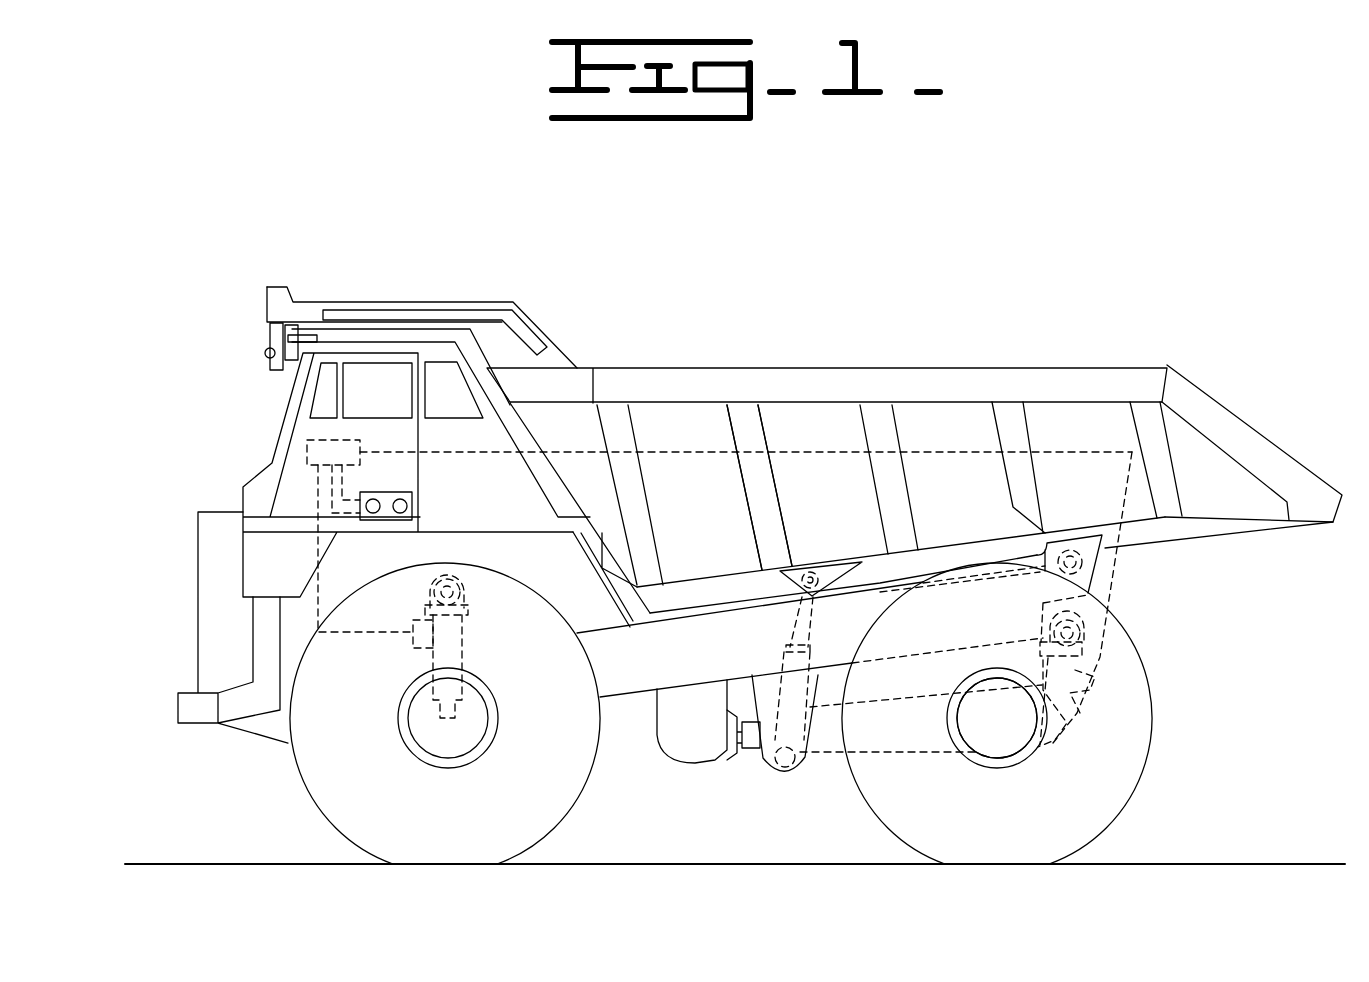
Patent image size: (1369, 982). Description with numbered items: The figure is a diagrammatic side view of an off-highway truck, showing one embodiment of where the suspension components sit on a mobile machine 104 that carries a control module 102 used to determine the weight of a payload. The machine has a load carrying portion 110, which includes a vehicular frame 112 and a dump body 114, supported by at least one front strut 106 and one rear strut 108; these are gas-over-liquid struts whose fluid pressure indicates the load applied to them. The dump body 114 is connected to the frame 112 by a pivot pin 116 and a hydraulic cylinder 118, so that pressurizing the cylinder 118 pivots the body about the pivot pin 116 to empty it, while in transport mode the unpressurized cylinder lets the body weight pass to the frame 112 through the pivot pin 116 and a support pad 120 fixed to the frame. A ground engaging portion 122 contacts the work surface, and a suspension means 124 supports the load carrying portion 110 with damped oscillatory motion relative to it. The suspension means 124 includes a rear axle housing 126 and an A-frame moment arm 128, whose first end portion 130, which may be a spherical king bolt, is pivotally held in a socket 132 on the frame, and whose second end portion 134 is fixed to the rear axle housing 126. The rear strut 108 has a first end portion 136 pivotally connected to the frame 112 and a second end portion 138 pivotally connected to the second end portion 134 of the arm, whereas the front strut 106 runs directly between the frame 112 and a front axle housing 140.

The control module 102 is at (292, 441).
The mobile machine 104 is at (562, 262).
The front strut 106 is at (465, 650).
The rear strut 108 is at (1078, 712).
The load carrying portion 110 is at (1025, 285).
The vehicular frame 112 is at (658, 672).
The dump body 114 is at (840, 440).
The pivot pin 116 is at (1112, 578).
The hydraulic cylinder 118 is at (795, 776).
The support pad 120 is at (785, 598).
The ground engaging portion 122 is at (948, 875).
The suspension means 124 is at (936, 771).
The rear axle housing 126 is at (945, 753).
The A-frame moment arm 128 is at (920, 733).
The first end portion 130 is at (753, 748).
The socket 132 is at (673, 747).
The second end portion 134 is at (1015, 768).
The first end portion 136 is at (1100, 643).
The second end portion 138 is at (1063, 752).
The front axle housing 140 is at (420, 728).